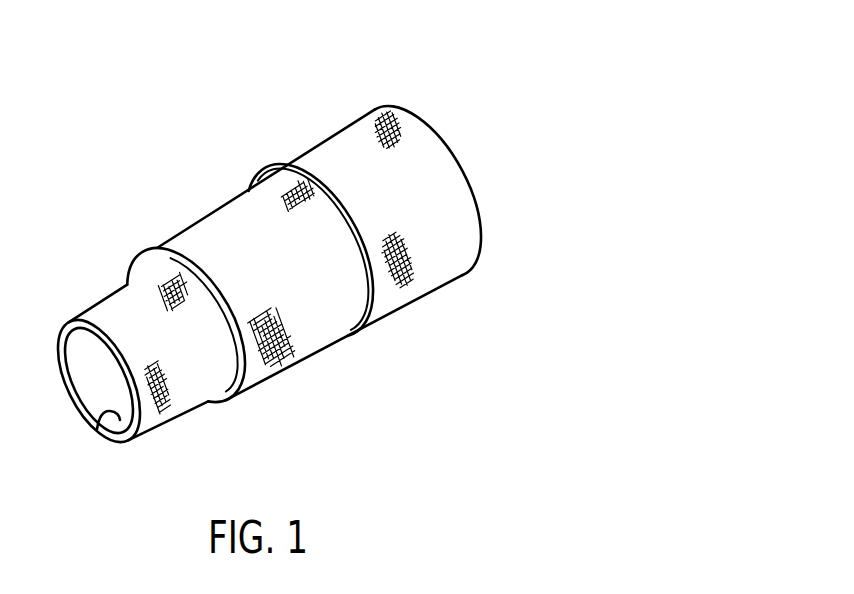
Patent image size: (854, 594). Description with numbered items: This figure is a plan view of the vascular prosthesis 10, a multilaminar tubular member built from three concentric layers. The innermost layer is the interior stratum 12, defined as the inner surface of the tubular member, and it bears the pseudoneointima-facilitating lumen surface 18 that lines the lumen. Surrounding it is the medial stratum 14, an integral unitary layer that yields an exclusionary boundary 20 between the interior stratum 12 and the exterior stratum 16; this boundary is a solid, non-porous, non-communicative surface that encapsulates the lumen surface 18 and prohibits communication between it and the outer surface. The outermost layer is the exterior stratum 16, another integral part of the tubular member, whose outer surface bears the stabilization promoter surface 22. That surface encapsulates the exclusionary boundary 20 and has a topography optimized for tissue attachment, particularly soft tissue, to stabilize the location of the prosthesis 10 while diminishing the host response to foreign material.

The vascular prosthesis 10 is at (363, 94).
The interior stratum 12 is at (188, 420).
The medial stratum 14 is at (333, 354).
The exterior stratum 16 is at (451, 294).
The PNI-facilitating lumen surface 18 is at (97, 427).
The exclusionary boundary 20 is at (230, 403).
The stabilization promoter surface 22 is at (365, 330).